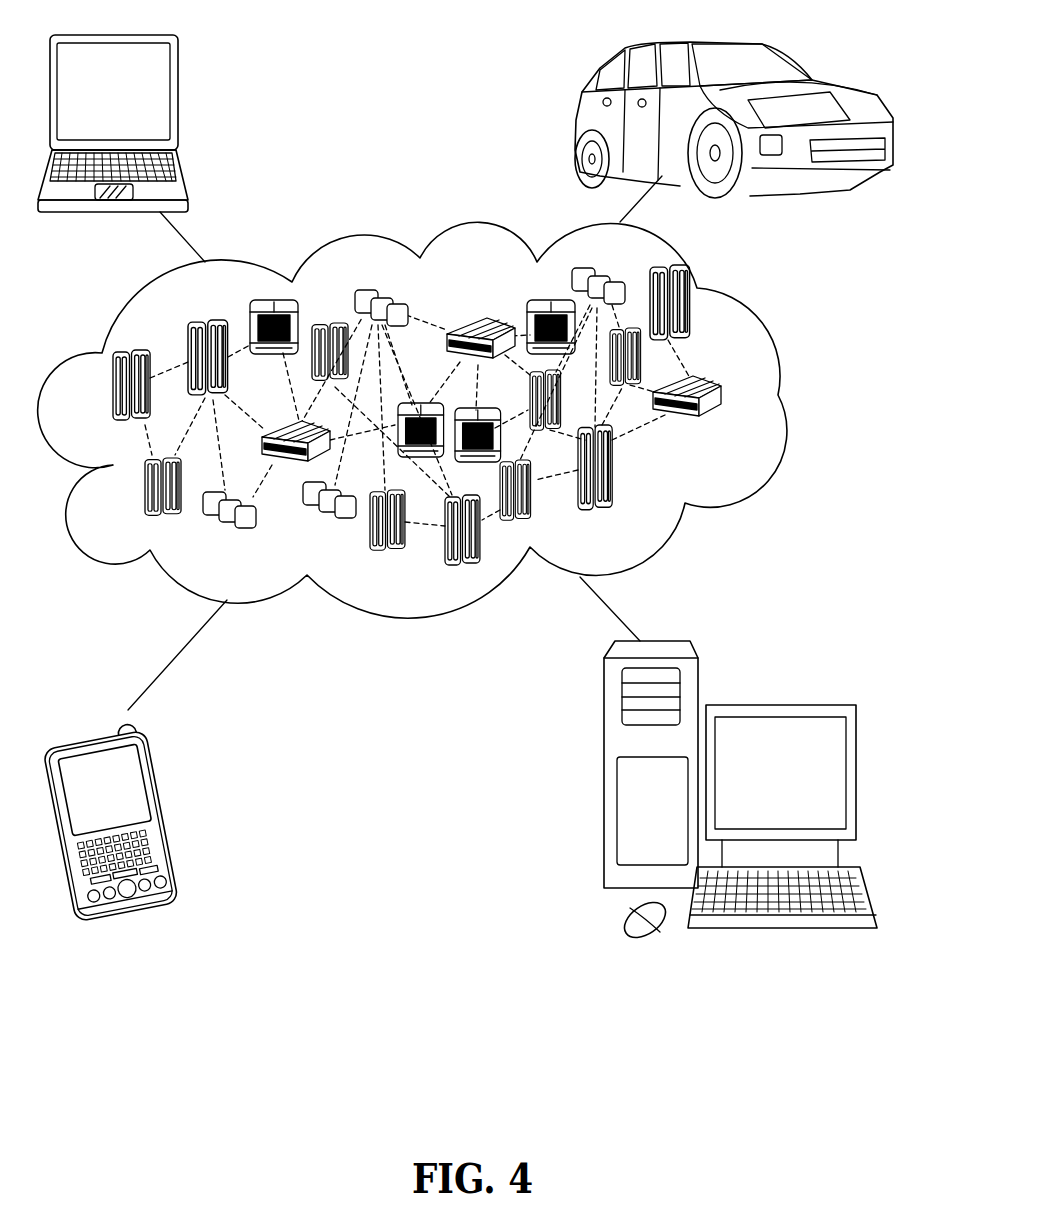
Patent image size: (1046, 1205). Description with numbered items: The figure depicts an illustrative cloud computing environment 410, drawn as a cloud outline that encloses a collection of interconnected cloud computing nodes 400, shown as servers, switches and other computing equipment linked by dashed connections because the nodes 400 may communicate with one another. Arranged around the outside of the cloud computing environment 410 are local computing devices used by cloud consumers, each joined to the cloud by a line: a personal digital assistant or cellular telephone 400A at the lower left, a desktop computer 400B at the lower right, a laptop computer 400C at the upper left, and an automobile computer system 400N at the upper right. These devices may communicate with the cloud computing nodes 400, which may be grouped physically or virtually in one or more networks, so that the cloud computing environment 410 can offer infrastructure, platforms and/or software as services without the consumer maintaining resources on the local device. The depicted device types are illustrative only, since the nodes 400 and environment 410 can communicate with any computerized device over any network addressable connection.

The cloud computing nodes 400 is at (732, 428).
The cloud computing environment 410 is at (778, 395).
The personal digital assistant (PDA) or cellular telephone 400A is at (170, 808).
The desktop computer 400B is at (778, 705).
The laptop computer 400C is at (177, 103).
The automobile computer system 400N is at (580, 118).